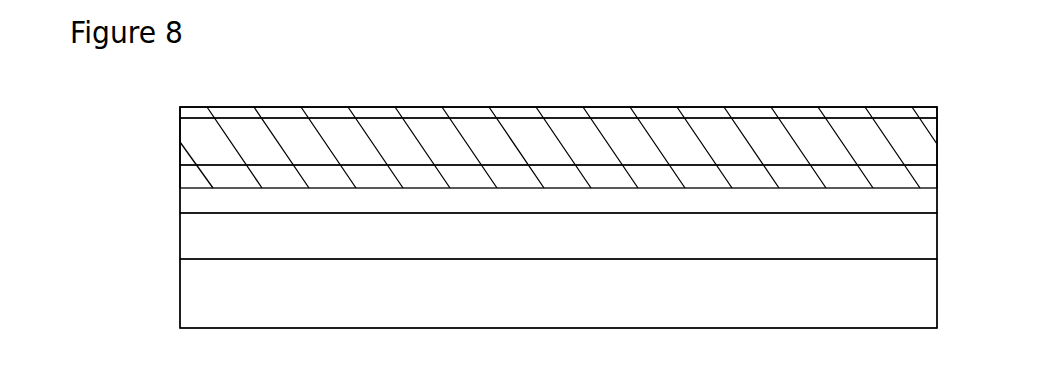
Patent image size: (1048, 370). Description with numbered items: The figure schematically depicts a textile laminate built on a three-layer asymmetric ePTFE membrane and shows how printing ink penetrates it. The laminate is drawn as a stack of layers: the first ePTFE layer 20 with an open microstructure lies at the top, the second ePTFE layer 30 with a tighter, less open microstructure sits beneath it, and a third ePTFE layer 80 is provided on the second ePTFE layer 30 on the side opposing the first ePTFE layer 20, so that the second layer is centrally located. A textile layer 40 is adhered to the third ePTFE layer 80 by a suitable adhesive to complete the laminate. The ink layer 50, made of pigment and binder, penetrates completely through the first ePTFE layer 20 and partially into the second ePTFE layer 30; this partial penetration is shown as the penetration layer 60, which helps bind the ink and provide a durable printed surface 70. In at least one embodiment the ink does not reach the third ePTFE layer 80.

The first ePTFE layer 20 is at (937, 118).
The second ePTFE layer 30 is at (937, 165).
The textile layer 40 is at (937, 259).
The ink layer 50 is at (180, 107).
The penetration layer 60 is at (228, 175).
The printed surface 70 is at (892, 106).
The third ePTFE layer 80 is at (937, 213).